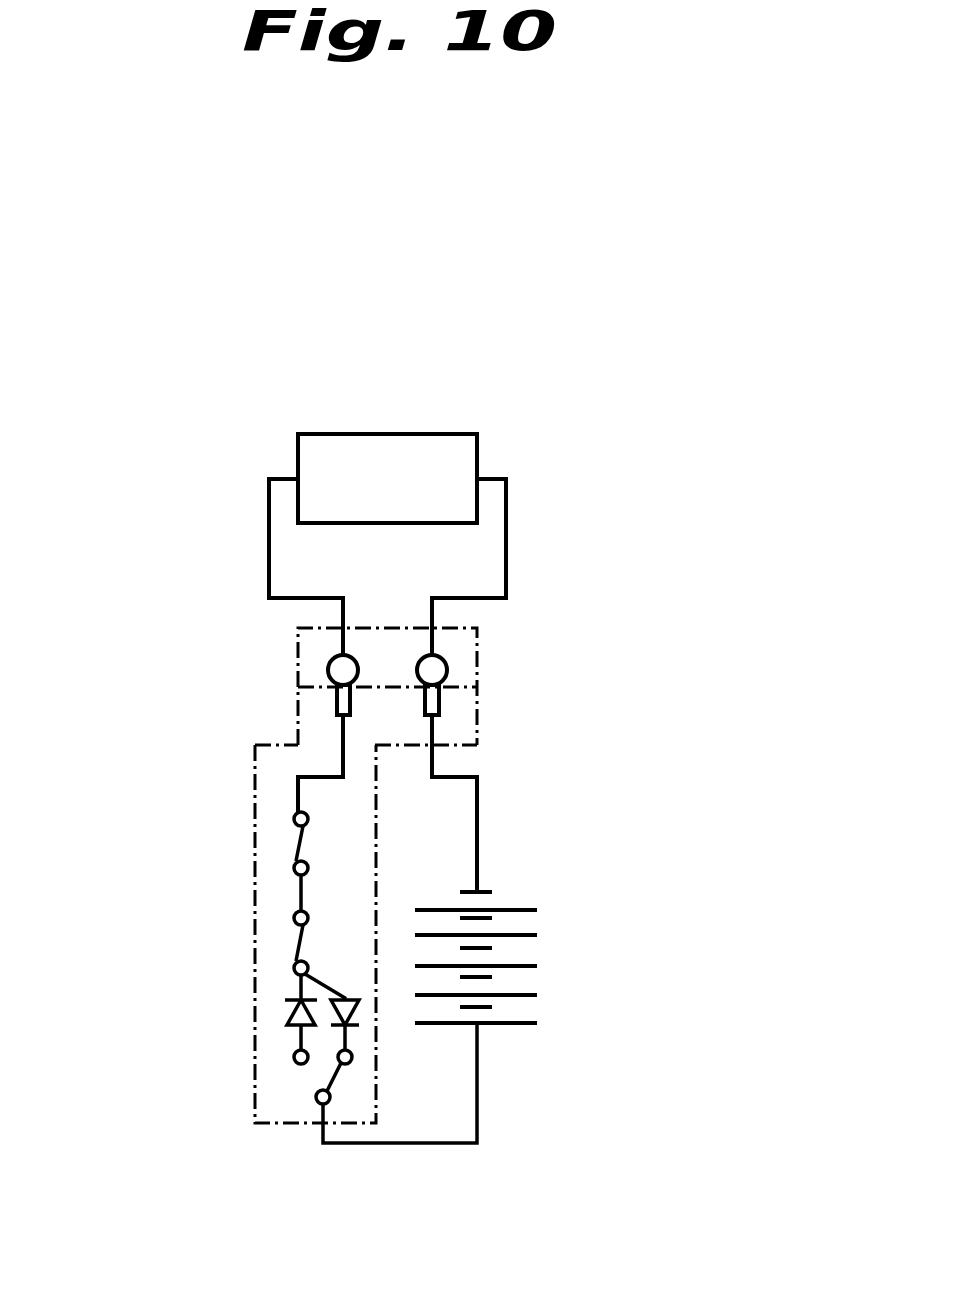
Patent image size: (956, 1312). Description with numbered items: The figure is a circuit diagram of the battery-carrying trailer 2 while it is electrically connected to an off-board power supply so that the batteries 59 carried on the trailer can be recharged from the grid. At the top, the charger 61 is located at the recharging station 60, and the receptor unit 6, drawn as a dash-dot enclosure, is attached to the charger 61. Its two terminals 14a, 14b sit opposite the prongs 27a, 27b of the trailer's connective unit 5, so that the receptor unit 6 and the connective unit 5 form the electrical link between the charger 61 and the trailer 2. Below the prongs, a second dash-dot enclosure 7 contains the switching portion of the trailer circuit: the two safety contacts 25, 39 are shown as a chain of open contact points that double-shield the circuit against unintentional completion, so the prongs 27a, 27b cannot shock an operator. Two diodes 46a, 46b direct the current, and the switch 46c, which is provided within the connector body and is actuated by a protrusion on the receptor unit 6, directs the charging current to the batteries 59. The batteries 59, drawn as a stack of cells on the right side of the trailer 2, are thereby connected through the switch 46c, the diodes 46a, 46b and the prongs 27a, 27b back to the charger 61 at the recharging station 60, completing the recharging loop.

The battery-carrying trailer 2 is at (567, 923).
The connective unit 5 is at (210, 688).
The receptor unit 6 is at (288, 662).
The switch unit 7 is at (254, 780).
The terminal 14a is at (334, 663).
The terminal 14b is at (447, 665).
The safety contact 25 is at (297, 839).
The prong 27a is at (338, 699).
The prong 27b is at (437, 703).
The safety contact 39 is at (293, 942).
The diode 46a is at (290, 1013).
The diode 46b is at (353, 1012).
The switch 46c is at (318, 1100).
The batteries 59 is at (542, 973).
The recharging station 60 is at (490, 445).
The charger 61 is at (425, 443).